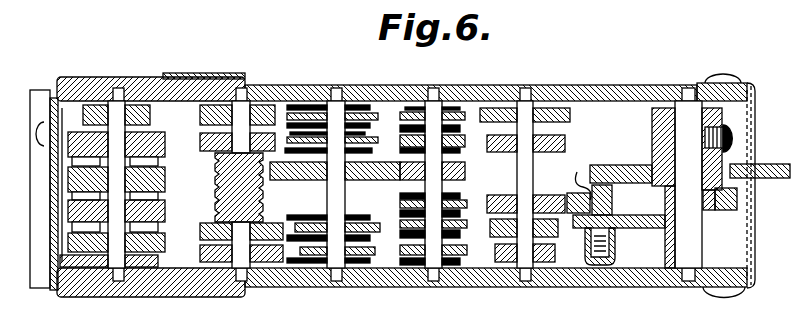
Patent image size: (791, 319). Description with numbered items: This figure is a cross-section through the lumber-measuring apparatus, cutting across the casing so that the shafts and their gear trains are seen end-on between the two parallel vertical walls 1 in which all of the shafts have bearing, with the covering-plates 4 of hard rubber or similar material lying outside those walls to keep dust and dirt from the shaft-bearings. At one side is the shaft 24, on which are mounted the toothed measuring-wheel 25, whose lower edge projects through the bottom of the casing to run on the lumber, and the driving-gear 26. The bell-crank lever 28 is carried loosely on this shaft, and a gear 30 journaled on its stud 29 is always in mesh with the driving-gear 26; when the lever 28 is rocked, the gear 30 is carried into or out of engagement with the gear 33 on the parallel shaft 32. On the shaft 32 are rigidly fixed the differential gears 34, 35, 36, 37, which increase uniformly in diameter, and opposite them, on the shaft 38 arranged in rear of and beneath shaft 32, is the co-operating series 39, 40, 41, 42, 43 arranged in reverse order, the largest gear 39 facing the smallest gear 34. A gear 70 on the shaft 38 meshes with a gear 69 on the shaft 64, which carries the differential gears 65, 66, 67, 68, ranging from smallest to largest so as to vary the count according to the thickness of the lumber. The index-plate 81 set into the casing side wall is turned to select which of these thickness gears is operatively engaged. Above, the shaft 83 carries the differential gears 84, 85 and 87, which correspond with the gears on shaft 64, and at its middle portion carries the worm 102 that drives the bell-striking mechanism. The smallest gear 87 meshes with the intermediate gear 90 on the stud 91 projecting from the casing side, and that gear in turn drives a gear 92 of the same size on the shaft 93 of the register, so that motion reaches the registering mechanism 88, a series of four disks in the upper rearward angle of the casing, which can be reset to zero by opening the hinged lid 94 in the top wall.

The vertical walls of casing 1 is at (612, 110).
The covering-plates 4 is at (470, 88).
The shaft 24 is at (688, 184).
The measuring-wheel 25 is at (764, 165).
The driving-gear 26 is at (728, 211).
The lever 28 is at (640, 228).
The stud 29 is at (592, 216).
The gear 30 is at (622, 168).
The shaft 32 is at (524, 184).
The gear 33 is at (552, 195).
The differential gear 34 is at (555, 256).
The differential gear 35 is at (558, 234).
The differential gear 36 is at (565, 148).
The differential gear 37 is at (570, 117).
The shaft 38 is at (433, 184).
The differential gear 39 is at (467, 252).
The differential gear 40 is at (467, 224).
The differential gear 41 is at (467, 204).
The differential gear 42 is at (458, 150).
The differential gear 43 is at (458, 120).
The shaft 64 is at (345, 190).
The differential gear 65 is at (310, 250).
The differential gear 66 is at (372, 224).
The differential gear 67 is at (372, 150).
The differential gear 68 is at (372, 121).
The gear 69 is at (306, 180).
The gear 70 is at (465, 172).
The index-plate 81 is at (50, 165).
The shaft 83 is at (241, 248).
The differential gear 84 is at (200, 248).
The differential gear 85 is at (200, 147).
The differential gear 87 is at (262, 106).
The registering mechanism 88 is at (165, 178).
The intermediate gear 90 is at (215, 75).
The stud 91 is at (168, 136).
The gear 92 is at (84, 116).
The shaft of the register 93 is at (115, 184).
The lid 94 is at (98, 78).
The worm 102 is at (258, 196).